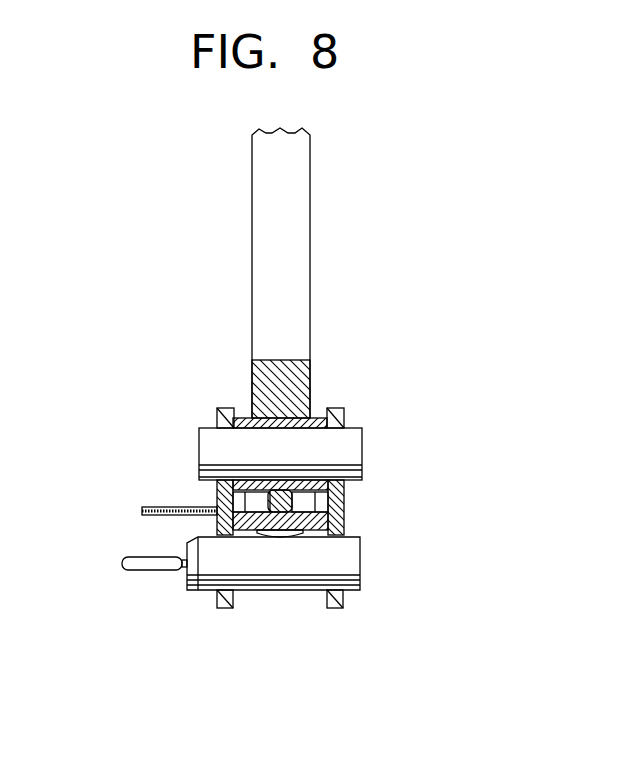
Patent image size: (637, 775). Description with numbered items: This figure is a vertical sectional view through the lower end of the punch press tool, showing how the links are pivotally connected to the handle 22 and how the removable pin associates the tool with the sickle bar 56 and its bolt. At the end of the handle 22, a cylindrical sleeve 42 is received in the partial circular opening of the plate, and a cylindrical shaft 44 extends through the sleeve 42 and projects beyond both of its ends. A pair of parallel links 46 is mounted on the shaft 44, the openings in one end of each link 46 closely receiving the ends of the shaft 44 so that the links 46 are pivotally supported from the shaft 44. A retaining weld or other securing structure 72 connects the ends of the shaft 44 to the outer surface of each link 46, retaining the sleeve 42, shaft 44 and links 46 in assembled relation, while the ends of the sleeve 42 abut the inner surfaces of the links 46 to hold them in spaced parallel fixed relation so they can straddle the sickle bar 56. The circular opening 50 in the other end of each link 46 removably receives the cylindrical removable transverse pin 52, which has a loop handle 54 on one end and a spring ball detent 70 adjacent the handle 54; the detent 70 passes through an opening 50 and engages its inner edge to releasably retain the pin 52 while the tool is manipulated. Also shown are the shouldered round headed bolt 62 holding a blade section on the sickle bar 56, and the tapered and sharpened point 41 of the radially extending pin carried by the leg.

The handle 22 is at (282, 188).
The cylindrical sleeve 42 is at (313, 420).
The retaining weld 72 is at (345, 422).
The cylindrical shaft 44 is at (342, 440).
The tapered and sharpened point 41 is at (313, 487).
The parallel links 46 is at (300, 506).
The shouldered round headed bolt 62 is at (300, 492).
The sickle bar 56 is at (320, 520).
The spring ball detent 70 is at (238, 537).
The removable transverse pin 52 is at (343, 563).
The circular opening 50 is at (218, 585).
The loop handle 54 is at (130, 565).